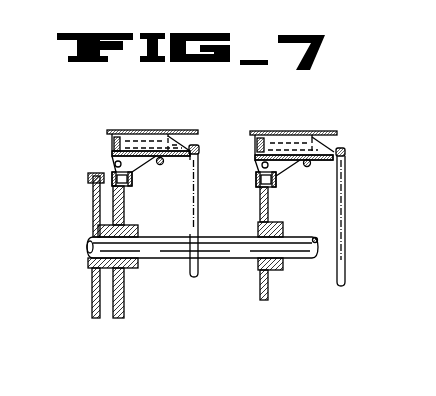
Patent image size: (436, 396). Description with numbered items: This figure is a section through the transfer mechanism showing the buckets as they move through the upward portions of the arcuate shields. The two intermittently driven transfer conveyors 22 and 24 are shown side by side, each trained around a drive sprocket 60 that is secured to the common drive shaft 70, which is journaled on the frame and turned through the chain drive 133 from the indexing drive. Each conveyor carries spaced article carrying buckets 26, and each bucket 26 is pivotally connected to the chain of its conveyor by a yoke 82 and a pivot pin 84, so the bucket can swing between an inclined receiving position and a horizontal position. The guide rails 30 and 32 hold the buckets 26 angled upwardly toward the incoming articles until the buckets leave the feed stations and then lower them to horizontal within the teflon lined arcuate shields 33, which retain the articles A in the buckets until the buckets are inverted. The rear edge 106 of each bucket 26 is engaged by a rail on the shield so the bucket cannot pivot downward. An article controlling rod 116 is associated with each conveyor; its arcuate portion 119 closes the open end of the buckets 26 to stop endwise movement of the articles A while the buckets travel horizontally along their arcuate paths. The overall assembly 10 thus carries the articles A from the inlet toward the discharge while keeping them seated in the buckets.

The apparatus 10 is at (416, 327).
The arcuate shield 33 is at (127, 131).
The rear edge 106 is at (112, 142).
The articles A is at (145, 136).
The bucket 26 is at (162, 138).
The article controlling rod 116 is at (197, 145).
The arcuate portion 119 is at (200, 222).
The pivot pin 84 is at (115, 163).
The guide rail 32 is at (163, 164).
The guide rail 30 is at (309, 166).
The yoke 82 is at (112, 178).
The transfer conveyor 24 is at (134, 185).
The transfer conveyor 22 is at (291, 186).
The chain drive 133 is at (90, 182).
The drive sprocket 60 is at (262, 297).
The drive shaft 70 is at (317, 258).